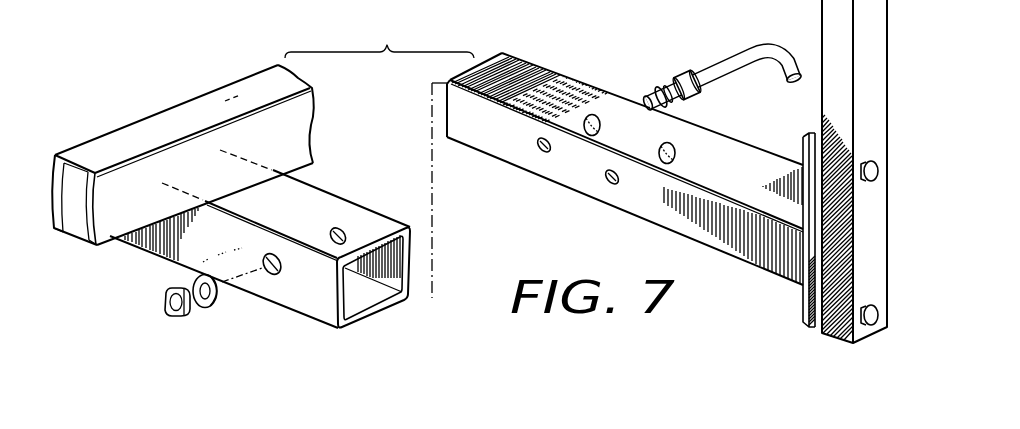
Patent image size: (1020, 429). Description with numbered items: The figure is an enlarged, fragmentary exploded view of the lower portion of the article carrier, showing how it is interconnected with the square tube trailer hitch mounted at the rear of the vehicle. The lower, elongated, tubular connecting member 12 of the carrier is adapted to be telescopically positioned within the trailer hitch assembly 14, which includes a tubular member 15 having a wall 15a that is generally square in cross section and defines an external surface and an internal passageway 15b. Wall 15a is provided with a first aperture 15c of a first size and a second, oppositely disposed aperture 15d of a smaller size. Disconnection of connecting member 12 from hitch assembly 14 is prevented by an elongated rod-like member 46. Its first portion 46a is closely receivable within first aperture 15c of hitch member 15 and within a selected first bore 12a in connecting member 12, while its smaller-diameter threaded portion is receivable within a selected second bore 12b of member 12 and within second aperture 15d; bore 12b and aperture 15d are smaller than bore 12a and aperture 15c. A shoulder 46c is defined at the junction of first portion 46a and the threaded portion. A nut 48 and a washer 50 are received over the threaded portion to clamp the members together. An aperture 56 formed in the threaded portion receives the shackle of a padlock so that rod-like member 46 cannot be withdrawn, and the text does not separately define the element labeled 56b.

The tubular connecting member 12 is at (625, 142).
The first bore 12a is at (592, 113).
The second bore 12b is at (537, 148).
The trailer hitch assembly 14 is at (330, 130).
The tubular member 15 is at (292, 178).
The wall 15a is at (303, 190).
The internal passageway 15b is at (362, 290).
The first aperture 15c is at (346, 226).
The second aperture 15d is at (267, 277).
The rod-like member 46 is at (717, 63).
The first portion 46a is at (750, 70).
The shoulder 46c is at (684, 72).
The nut 48 is at (163, 302).
The washer 50 is at (210, 310).
The aperture 56 is at (664, 105).
The clip loop 56b is at (665, 83).